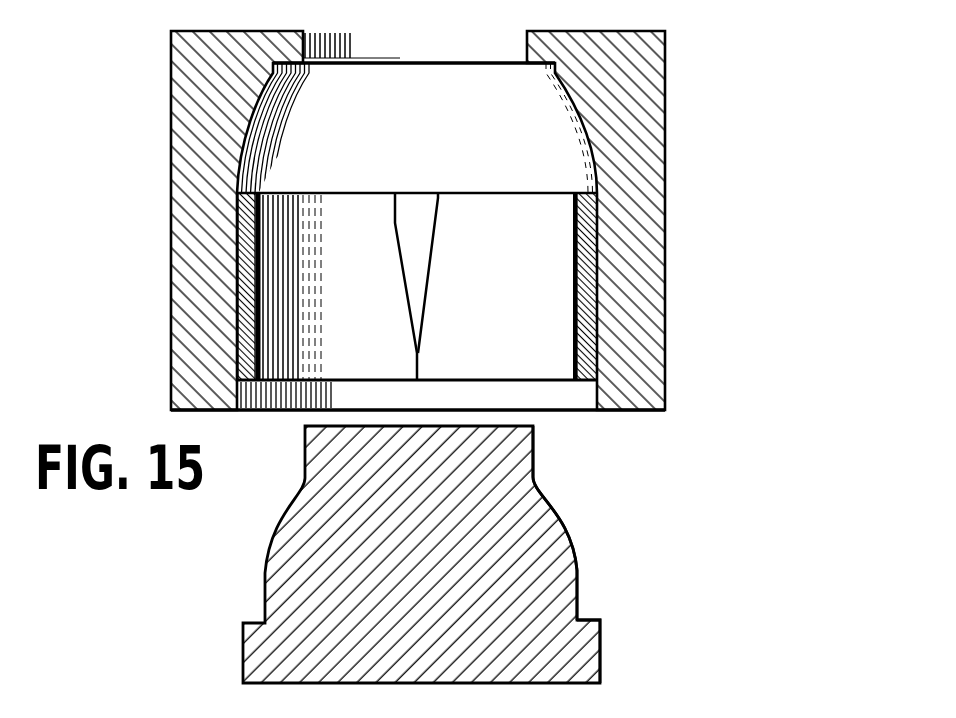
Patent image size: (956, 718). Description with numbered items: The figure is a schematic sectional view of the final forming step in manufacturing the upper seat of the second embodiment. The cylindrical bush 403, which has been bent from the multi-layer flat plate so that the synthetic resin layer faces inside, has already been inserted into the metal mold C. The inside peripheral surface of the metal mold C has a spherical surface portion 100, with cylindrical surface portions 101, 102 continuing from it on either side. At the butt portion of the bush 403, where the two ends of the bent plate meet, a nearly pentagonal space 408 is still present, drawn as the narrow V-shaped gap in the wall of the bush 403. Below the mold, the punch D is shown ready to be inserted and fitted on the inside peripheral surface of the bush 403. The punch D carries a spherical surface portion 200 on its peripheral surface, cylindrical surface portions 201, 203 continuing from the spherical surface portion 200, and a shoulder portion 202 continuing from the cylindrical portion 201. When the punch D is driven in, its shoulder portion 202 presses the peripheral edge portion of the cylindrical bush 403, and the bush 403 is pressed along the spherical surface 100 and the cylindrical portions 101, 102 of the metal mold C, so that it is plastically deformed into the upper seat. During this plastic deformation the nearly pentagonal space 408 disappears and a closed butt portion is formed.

The metal mold C is at (628, 52).
The punch D is at (315, 570).
The spherical surface portion 100 is at (590, 118).
The cylindrical surface portion 101 is at (590, 233).
The cylindrical surface portion 102 is at (555, 68).
The cylindrical bush 403 is at (513, 298).
The nearly pentagonal space 408 is at (417, 223).
The spherical surface portion 200 is at (563, 520).
The cylindrical surface portion 201 is at (578, 572).
The shoulder portion 202 is at (590, 618).
The cylindrical surface portion 203 is at (535, 455).